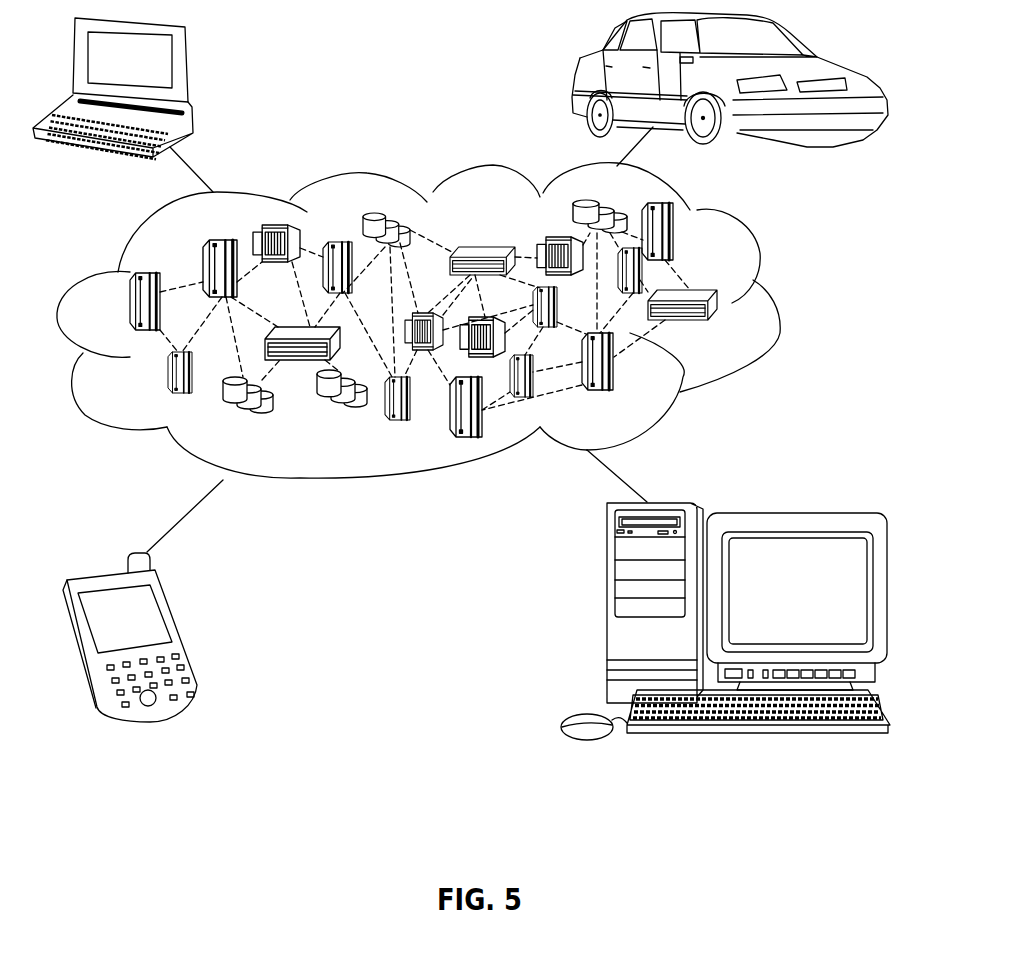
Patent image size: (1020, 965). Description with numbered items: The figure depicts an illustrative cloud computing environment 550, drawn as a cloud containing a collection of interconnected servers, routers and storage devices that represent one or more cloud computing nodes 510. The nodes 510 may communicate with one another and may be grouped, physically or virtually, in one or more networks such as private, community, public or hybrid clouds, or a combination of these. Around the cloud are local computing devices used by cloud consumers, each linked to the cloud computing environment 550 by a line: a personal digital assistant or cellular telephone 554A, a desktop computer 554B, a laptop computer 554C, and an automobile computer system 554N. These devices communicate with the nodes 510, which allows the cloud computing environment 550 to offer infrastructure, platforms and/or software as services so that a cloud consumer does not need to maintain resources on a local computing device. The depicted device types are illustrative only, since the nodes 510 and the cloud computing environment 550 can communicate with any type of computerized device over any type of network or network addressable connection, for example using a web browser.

The cloud computing nodes 510 is at (737, 323).
The cloud computing environment 550 is at (762, 266).
The personal digital assistant (PDA) or cellular telephone 554A is at (183, 628).
The desktop computer 554B is at (607, 612).
The laptop computer 554C is at (190, 65).
The automobile computer system 554N is at (580, 68).